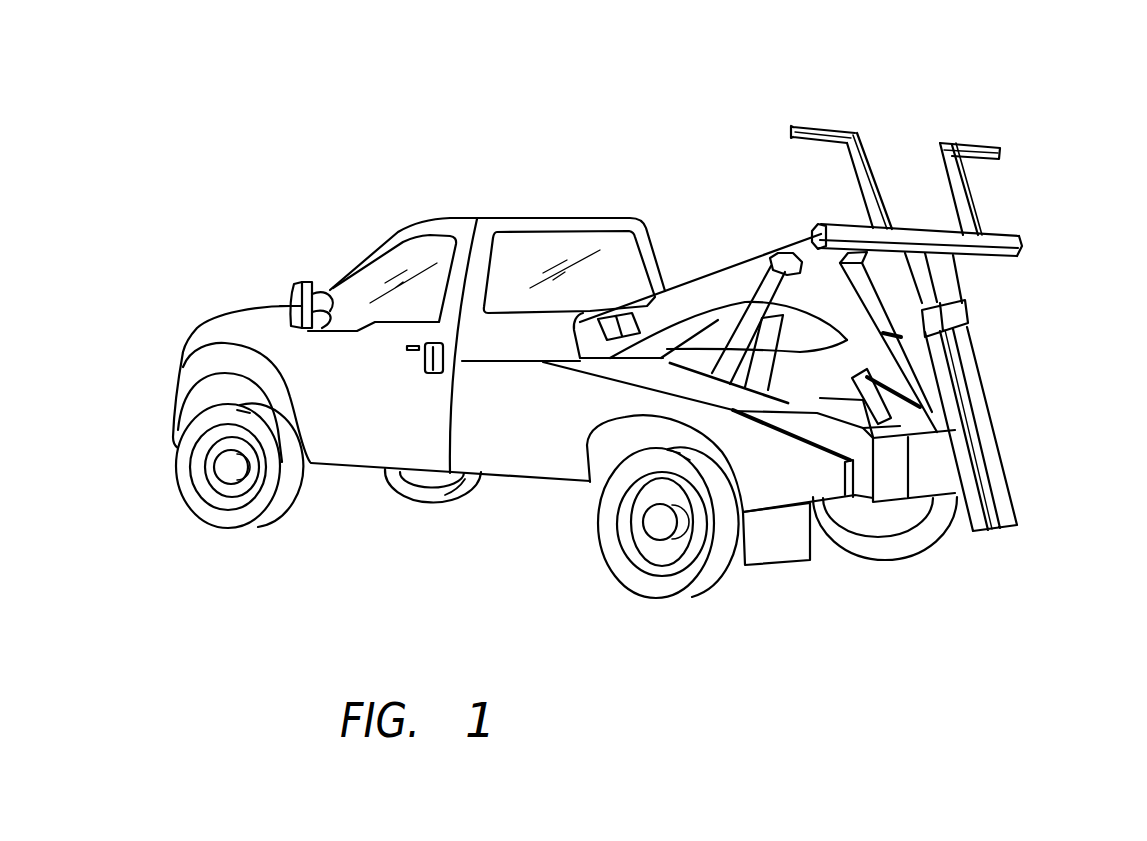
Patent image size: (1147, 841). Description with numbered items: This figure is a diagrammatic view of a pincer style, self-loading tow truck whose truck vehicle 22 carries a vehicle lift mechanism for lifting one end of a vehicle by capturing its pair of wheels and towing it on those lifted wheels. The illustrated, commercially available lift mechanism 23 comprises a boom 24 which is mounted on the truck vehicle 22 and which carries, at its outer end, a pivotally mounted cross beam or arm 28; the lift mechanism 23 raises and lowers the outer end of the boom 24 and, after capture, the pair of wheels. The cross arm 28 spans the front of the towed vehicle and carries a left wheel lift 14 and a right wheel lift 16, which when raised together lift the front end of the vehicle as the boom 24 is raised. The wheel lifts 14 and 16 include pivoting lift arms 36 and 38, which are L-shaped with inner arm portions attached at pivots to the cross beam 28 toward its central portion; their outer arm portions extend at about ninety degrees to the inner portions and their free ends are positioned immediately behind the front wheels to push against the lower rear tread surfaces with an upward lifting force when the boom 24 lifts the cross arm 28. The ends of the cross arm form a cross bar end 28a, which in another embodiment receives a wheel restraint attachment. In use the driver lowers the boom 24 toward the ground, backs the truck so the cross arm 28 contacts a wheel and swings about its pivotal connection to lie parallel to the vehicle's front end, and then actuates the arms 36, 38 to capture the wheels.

The left wheel lift 14 is at (802, 125).
The right wheel lift 16 is at (1018, 133).
The truck vehicle 22 is at (658, 322).
The lift mechanism 23 is at (858, 332).
The boom 24 is at (1003, 505).
The cross beam or arm 28 is at (922, 198).
The cross bar end 28a is at (812, 236).
The pivoting lift arm 36 is at (977, 189).
The pivoting lift arm 38 is at (858, 178).